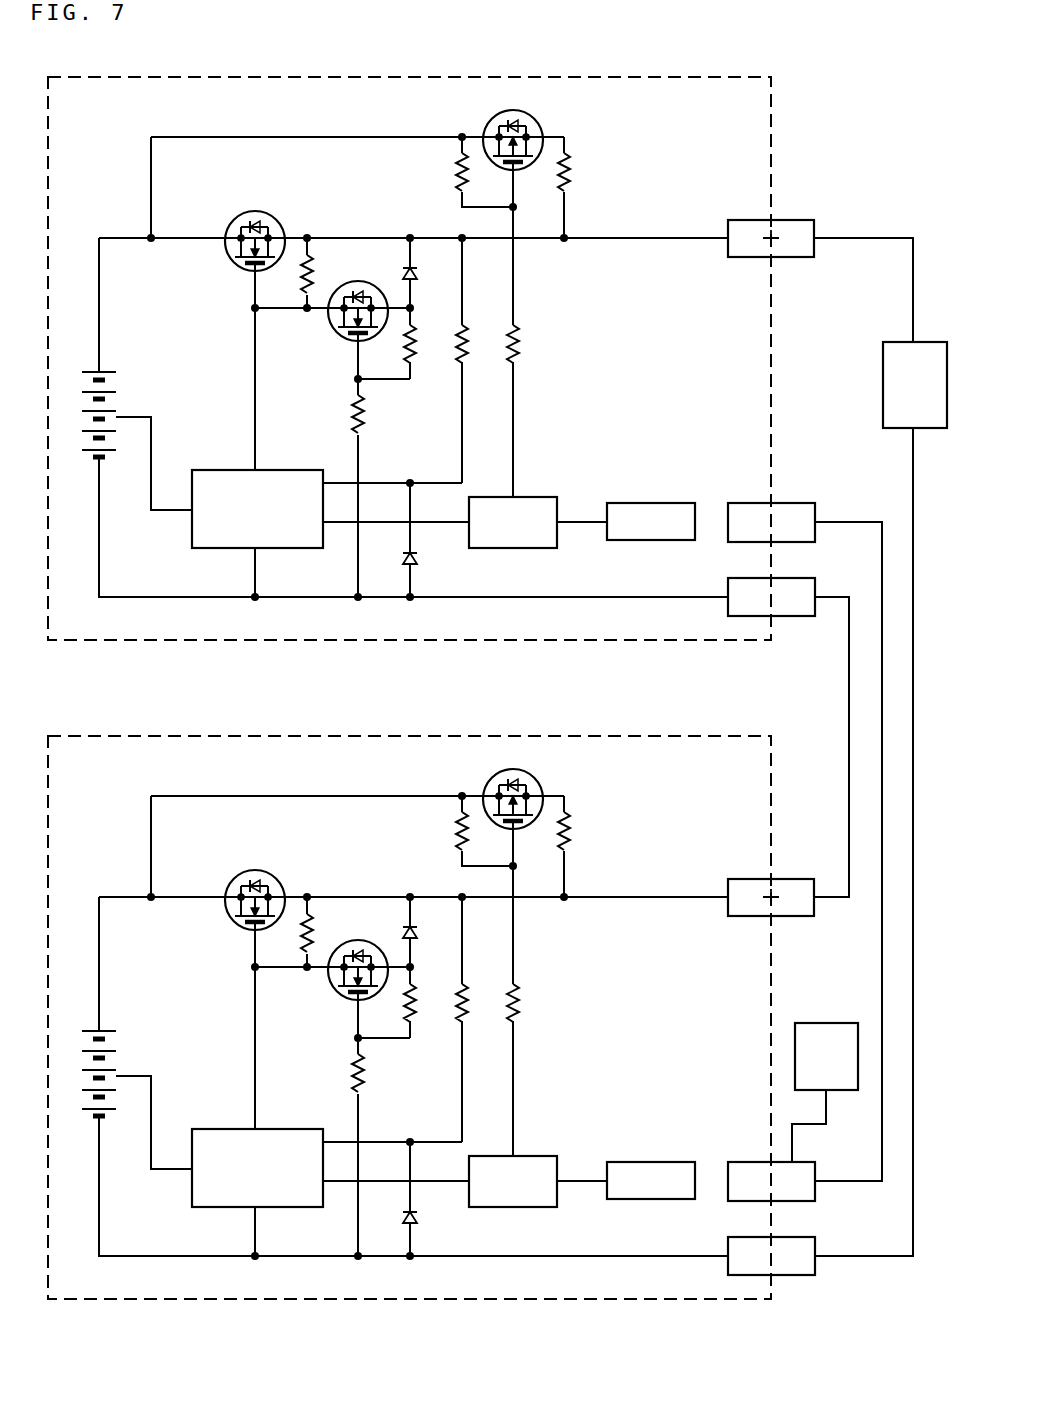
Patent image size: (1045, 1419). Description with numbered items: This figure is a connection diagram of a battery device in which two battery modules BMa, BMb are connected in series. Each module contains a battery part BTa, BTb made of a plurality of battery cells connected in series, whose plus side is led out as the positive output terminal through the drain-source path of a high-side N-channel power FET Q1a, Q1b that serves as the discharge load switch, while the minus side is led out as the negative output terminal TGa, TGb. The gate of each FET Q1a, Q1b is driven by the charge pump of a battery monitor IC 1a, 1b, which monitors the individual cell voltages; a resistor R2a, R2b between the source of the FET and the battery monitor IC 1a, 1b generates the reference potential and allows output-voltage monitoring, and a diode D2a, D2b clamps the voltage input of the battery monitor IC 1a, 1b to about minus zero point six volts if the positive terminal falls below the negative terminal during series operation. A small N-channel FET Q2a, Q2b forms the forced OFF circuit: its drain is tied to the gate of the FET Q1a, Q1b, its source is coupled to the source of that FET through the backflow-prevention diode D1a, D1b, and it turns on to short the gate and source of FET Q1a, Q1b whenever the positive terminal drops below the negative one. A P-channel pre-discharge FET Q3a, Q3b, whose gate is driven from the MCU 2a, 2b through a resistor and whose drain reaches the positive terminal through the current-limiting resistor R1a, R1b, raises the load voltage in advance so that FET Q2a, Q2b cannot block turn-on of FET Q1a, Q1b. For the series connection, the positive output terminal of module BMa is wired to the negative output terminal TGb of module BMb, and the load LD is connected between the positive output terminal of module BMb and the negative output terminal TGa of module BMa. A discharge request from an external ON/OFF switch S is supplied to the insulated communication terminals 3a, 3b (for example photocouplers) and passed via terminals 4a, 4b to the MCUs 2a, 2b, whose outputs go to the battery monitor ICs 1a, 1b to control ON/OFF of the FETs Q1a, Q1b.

The battery module BMb is at (589, 77).
The battery module BMa is at (409, 1005).
The FET Q1b is at (235, 268).
The FET Q2b is at (343, 338).
The FET Q3b is at (488, 118).
The resistor R1b is at (570, 185).
The resistor R2b is at (466, 352).
The diode D1b is at (415, 283).
The diode D2b is at (418, 560).
The battery part BTb is at (137, 360).
The battery monitor IC 1b is at (224, 470).
The MCU 2b is at (517, 549).
The communication terminal 3b is at (749, 503).
The communication terminal 4b is at (648, 503).
The negative output terminal TGb is at (748, 578).
The FET Q1a is at (228, 911).
The FET Q2a is at (330, 981).
The FET Q3a is at (485, 791).
The resistor R1a is at (584, 848).
The resistor R2a is at (481, 1018).
The diode D1a is at (431, 954).
The diode D2a is at (442, 1224).
The battery part BTa is at (113, 1057).
The battery monitor IC 1a is at (252, 1154).
The MCU 2a is at (515, 1196).
The communication terminal 3a is at (758, 1169).
The communication terminal 4a is at (649, 1168).
The negative output terminal TGa is at (750, 1242).
The load LD is at (883, 385).
The on/off switch S is at (828, 1023).